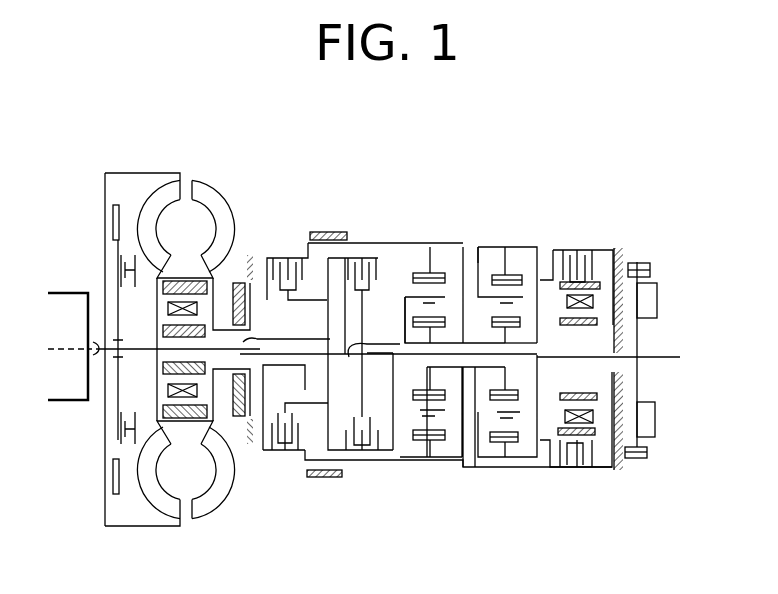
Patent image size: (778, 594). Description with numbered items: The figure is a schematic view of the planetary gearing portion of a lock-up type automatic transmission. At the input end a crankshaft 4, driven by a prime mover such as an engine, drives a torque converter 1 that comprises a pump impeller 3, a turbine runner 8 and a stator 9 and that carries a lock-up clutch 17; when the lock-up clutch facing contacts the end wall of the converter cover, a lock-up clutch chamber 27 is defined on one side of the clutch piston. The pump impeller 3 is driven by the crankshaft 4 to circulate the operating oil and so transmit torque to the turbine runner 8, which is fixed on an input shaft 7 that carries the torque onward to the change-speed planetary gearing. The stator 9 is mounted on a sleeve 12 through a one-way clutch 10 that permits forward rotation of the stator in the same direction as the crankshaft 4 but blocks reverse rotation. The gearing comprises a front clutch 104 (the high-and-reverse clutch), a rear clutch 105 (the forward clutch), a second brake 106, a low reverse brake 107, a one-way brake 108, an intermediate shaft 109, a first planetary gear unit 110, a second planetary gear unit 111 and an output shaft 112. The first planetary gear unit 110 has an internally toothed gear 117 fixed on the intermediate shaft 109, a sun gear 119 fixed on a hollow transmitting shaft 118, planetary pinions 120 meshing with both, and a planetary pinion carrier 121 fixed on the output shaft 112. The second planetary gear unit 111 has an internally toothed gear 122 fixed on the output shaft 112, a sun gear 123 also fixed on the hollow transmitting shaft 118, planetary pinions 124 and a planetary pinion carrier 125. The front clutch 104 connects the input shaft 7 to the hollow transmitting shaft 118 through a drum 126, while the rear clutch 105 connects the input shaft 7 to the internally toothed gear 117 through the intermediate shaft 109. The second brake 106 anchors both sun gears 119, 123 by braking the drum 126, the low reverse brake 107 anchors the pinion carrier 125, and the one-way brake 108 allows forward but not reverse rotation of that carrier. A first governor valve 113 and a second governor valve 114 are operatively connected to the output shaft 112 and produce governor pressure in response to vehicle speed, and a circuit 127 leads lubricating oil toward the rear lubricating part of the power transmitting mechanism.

The torque converter 1 is at (231, 196).
The pump impeller 3 is at (228, 213).
The crankshaft 4 is at (74, 347).
The input shaft 7 is at (133, 352).
The turbine runner 8 is at (166, 193).
The stator 9 is at (193, 256).
The one-way clutch 10 is at (168, 309).
The sleeve 12 is at (258, 338).
The lock-up clutch 17 is at (112, 238).
The lock-up clutch chamber 27 is at (110, 268).
The front clutch 104 is at (293, 258).
The rear clutch 105 is at (378, 262).
The second brake 106 is at (338, 231).
The low reverse brake 107 is at (570, 250).
The one-way brake 108 is at (594, 308).
The intermediate shaft 109 is at (327, 378).
The first planetary gear unit 110 is at (444, 267).
The second planetary gear unit 111 is at (501, 273).
The output shaft 112 is at (655, 360).
The first governor valve 113 is at (655, 405).
The second governor valve 114 is at (657, 304).
The internally toothed gear 117 is at (423, 271).
The hollow transmitting shaft 118 is at (473, 370).
The sun gear 119 is at (422, 315).
The planetary pinions 120 is at (403, 360).
The planetary pinion carrier 121 is at (370, 356).
The internally toothed gear 122 is at (518, 272).
The sun gear 123 is at (514, 337).
The planetary pinions 124 is at (519, 322).
The planetary pinion carrier 125 is at (478, 247).
The drum 126 is at (375, 243).
The circuit 127 is at (243, 452).